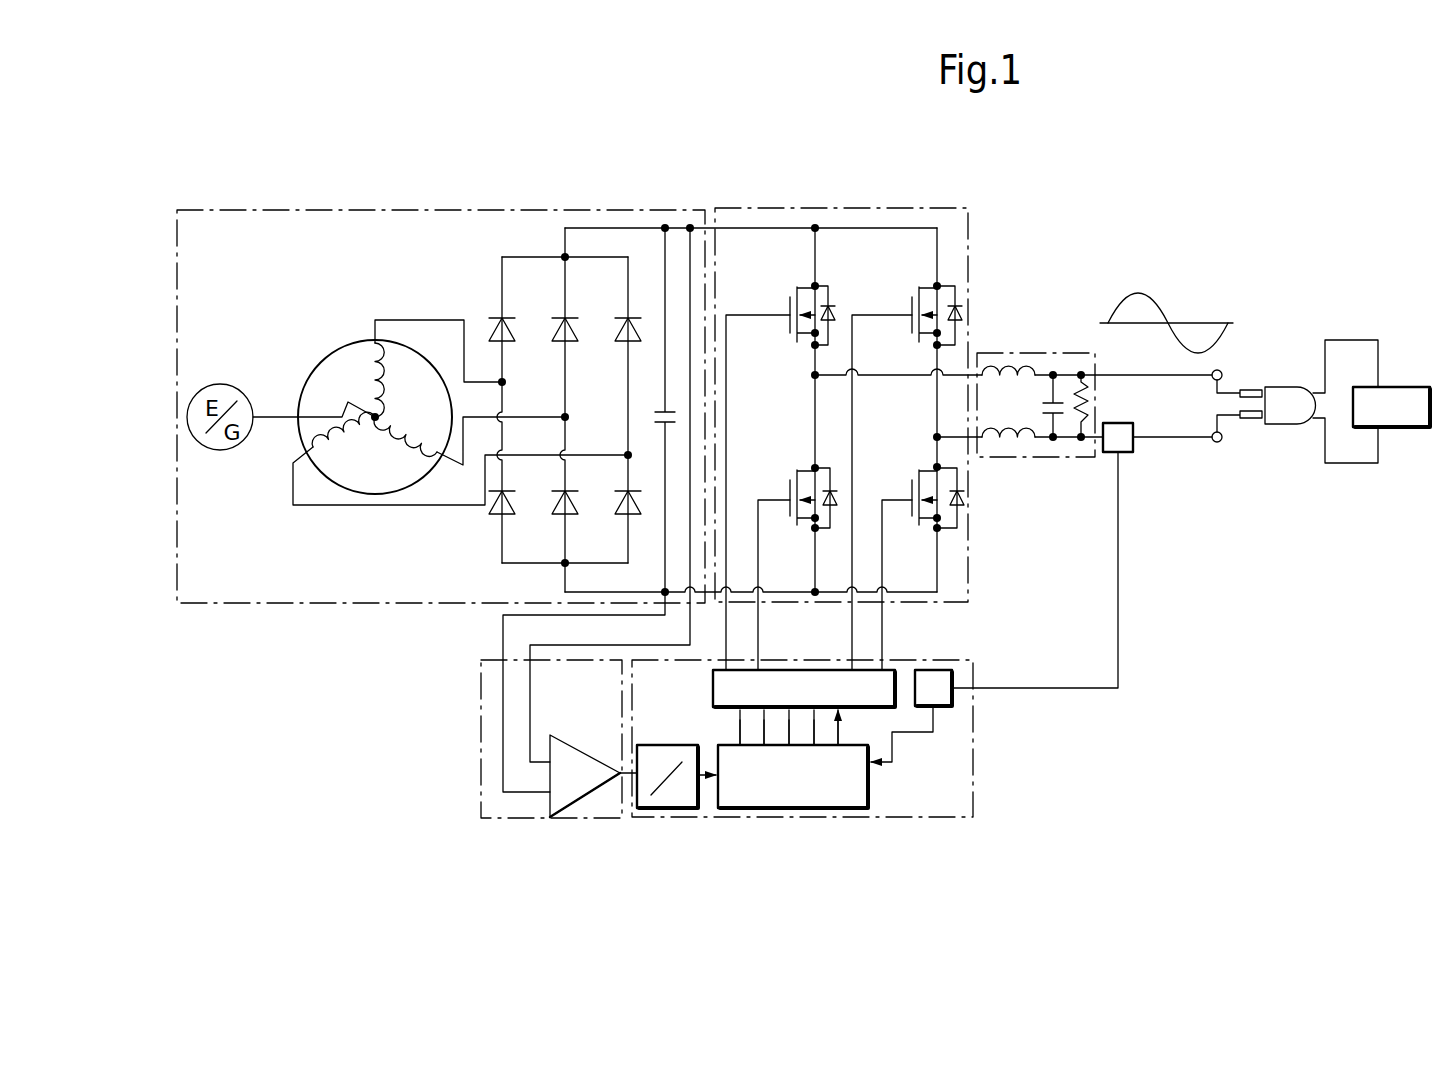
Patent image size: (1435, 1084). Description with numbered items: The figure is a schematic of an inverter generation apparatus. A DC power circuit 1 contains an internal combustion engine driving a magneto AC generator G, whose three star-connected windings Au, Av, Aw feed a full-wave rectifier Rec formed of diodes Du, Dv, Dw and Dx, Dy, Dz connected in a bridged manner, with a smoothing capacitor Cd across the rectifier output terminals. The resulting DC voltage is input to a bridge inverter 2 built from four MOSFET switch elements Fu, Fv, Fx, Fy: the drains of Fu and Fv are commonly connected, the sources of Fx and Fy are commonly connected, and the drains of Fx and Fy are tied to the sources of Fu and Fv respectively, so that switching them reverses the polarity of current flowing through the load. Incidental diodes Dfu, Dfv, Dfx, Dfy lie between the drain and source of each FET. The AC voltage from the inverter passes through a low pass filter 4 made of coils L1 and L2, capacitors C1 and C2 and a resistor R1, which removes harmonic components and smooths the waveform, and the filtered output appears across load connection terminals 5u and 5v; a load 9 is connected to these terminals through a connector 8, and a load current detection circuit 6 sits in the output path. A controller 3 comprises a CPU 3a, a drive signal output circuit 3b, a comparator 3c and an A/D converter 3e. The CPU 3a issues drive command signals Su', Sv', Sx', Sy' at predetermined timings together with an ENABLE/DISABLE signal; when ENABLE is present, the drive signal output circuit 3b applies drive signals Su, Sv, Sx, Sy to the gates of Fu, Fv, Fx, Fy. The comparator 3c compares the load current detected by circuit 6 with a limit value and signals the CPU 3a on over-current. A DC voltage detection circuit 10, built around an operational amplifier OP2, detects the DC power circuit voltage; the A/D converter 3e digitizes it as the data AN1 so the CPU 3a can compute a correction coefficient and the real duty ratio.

The DC power circuit 1 is at (378, 208).
The bridge inverter 2 is at (796, 207).
The controller 3 is at (906, 659).
The CPU 3a is at (872, 802).
The drive signal output circuit 3b is at (712, 693).
The comparator 3c is at (950, 670).
The A/D converter 3e is at (663, 811).
The filter 4 is at (1023, 351).
The load connection terminal 5u is at (1222, 370).
The load connection terminal 5v is at (1222, 442).
The load current detection circuit 6 is at (1121, 422).
The connector 8 is at (1288, 351).
The load 9 is at (1408, 385).
The DC voltage detection circuit 10 is at (489, 658).
The magneto AC generator G is at (325, 355).
The armature winding U Au is at (376, 358).
The armature winding V Av is at (412, 447).
The armature winding W Aw is at (338, 445).
The full-wave rectifier Rec is at (550, 380).
The diode Du is at (493, 318).
The diode Dv is at (556, 318).
The diode Dw is at (618, 318).
The diode Dx is at (490, 511).
The diode Dy is at (560, 514).
The diode Dz is at (620, 514).
The smoothing capacitor Cd is at (650, 410).
The switch element Fu is at (803, 292).
The switch element Fv is at (924, 292).
The switch element Fx is at (808, 477).
The switch element Fy is at (929, 477).
The incidental diode Dfu is at (831, 304).
The incidental diode Dfv is at (964, 309).
The incidental diode Dfx is at (843, 508).
The incidental diode Dfy is at (964, 493).
The drive signal Su is at (758, 476).
The drive signal Sv is at (882, 476).
The drive signal Sx is at (770, 568).
The drive signal Sy is at (891, 568).
The coil L1 is at (1010, 367).
The coil L2 is at (1010, 446).
The capacitor C1 is at (1043, 405).
The capacitor C2 is at (1072, 428).
The resistor R1 is at (1089, 395).
The operational amplifier OP2 is at (593, 776).
The DC voltage data AN1 is at (622, 775).
The drive command signal Su' is at (720, 796).
The drive command signal Sv' is at (767, 796).
The drive command signal Sx' is at (799, 796).
The drive command signal Sy' is at (857, 796).